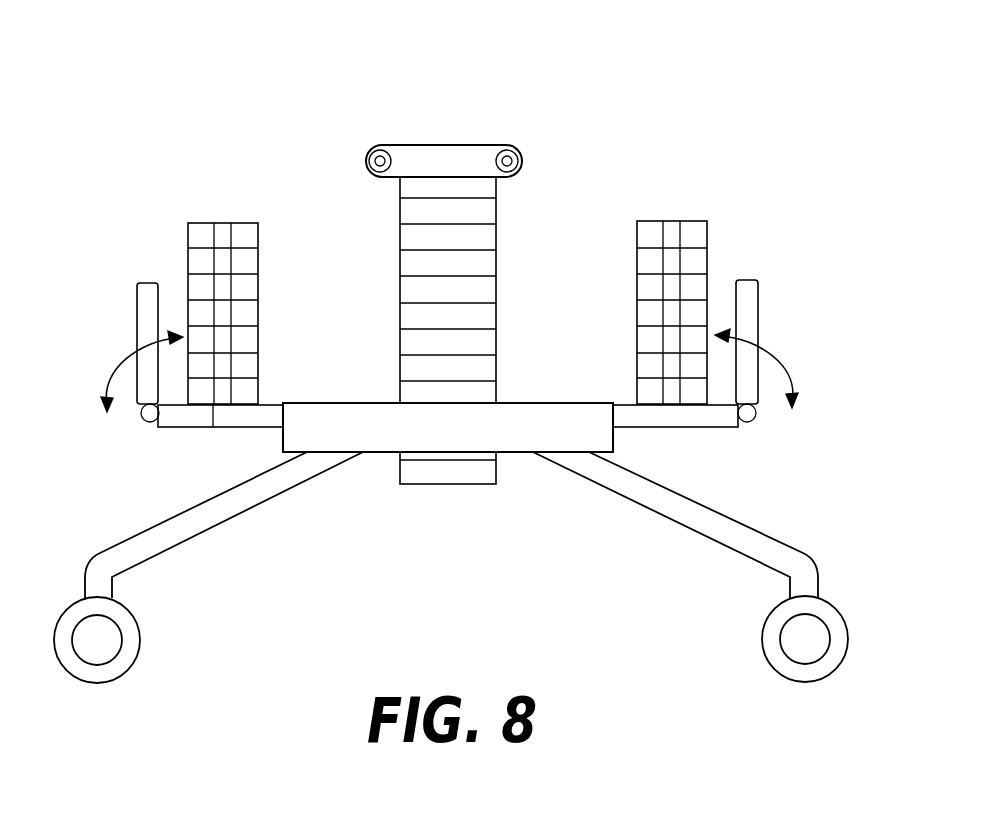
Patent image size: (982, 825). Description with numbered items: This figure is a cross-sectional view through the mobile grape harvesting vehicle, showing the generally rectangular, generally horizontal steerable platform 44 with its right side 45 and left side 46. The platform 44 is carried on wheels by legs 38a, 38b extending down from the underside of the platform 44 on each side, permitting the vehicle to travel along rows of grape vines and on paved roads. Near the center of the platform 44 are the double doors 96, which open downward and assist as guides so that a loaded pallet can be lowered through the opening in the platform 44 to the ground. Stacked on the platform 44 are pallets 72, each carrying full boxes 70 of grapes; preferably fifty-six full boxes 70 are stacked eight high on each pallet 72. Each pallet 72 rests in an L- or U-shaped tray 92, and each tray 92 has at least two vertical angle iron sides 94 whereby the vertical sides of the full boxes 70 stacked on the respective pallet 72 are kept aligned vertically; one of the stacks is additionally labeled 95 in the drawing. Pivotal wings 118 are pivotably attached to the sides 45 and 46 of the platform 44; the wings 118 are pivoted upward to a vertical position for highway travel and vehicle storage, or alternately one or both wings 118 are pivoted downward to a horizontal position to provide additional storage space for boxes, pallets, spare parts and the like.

The double doors 96 is at (393, 145).
The vertical angle iron sides 94 is at (400, 366).
The full boxes 70 is at (188, 231).
The left weight stack 95 is at (222, 232).
The pallet 72 is at (258, 384).
The wings 118 is at (137, 295).
The right side 45 is at (173, 420).
The steerable platform 44 is at (213, 413).
The left side 46 is at (724, 420).
The tray 92 is at (441, 484).
The left leg with wheel 38a is at (186, 533).
The right leg with wheel 38b is at (711, 533).